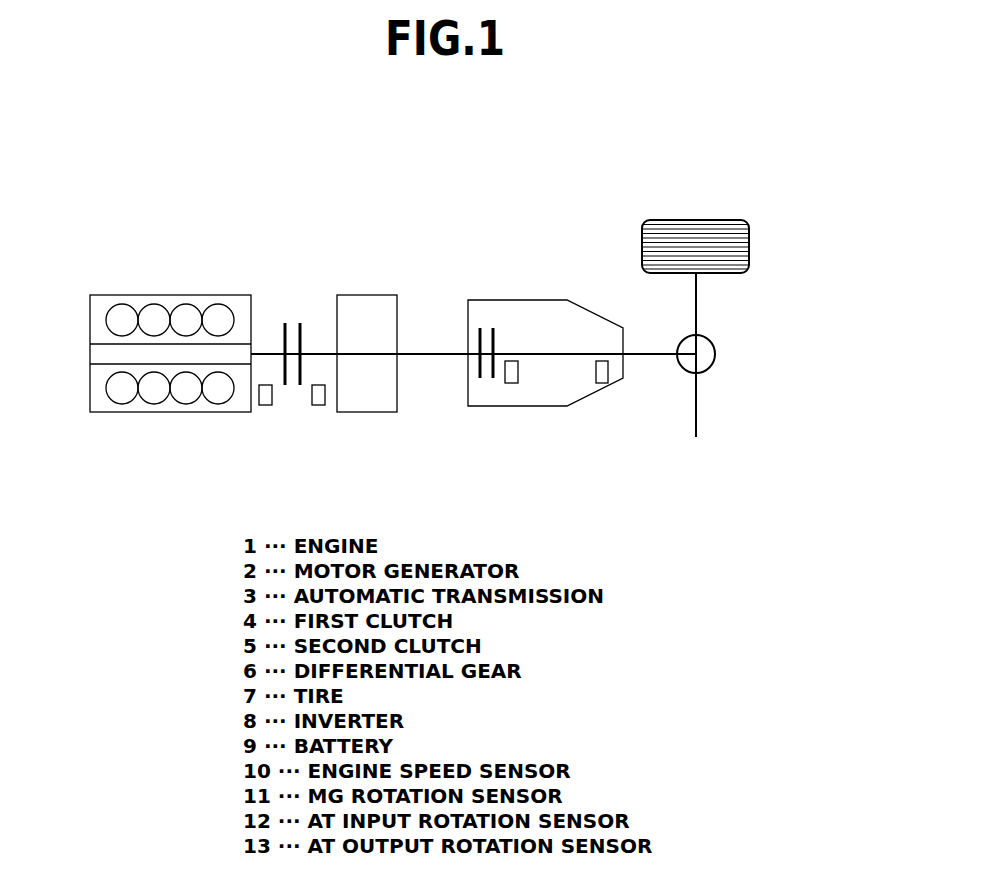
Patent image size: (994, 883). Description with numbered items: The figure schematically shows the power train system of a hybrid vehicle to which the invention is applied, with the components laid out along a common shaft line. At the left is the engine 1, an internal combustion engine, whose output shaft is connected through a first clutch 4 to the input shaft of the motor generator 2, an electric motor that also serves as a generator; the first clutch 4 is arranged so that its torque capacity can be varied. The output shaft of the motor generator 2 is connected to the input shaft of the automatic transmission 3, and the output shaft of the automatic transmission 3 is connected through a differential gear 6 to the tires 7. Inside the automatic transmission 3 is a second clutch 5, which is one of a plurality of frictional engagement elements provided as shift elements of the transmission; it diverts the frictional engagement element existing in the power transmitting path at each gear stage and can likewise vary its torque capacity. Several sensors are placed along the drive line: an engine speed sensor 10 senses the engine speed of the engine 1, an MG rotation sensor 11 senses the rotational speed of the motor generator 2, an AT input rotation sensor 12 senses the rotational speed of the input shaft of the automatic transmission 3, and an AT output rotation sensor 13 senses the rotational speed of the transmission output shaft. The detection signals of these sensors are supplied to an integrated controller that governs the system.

The engine 1 is at (135, 302).
The motor generator 2 is at (360, 300).
The automatic transmission 3 is at (543, 306).
The first clutch 4 is at (290, 305).
The second clutch 5 is at (484, 310).
The differential gear 6 is at (705, 345).
The tires 7 is at (749, 238).
The engine speed sensor 10 is at (265, 406).
The MG rotation sensor 11 is at (320, 406).
The AT input rotation sensor 12 is at (512, 384).
The AT output rotation sensor 13 is at (601, 384).